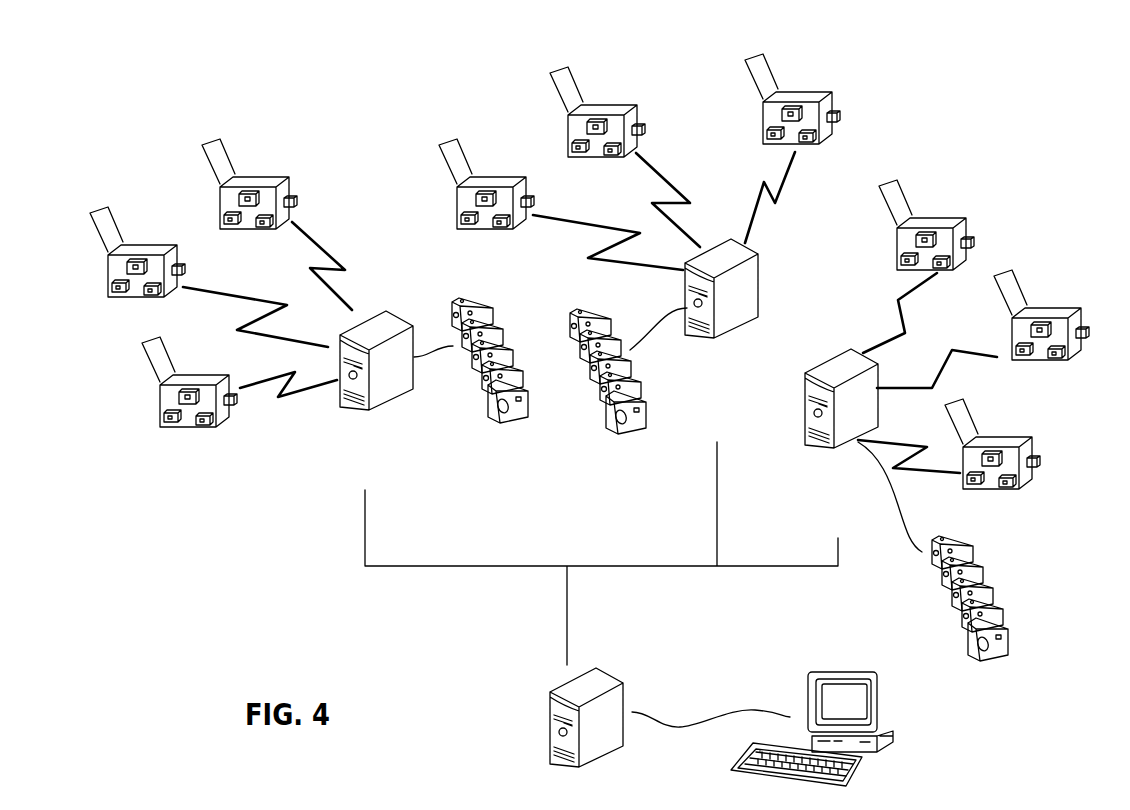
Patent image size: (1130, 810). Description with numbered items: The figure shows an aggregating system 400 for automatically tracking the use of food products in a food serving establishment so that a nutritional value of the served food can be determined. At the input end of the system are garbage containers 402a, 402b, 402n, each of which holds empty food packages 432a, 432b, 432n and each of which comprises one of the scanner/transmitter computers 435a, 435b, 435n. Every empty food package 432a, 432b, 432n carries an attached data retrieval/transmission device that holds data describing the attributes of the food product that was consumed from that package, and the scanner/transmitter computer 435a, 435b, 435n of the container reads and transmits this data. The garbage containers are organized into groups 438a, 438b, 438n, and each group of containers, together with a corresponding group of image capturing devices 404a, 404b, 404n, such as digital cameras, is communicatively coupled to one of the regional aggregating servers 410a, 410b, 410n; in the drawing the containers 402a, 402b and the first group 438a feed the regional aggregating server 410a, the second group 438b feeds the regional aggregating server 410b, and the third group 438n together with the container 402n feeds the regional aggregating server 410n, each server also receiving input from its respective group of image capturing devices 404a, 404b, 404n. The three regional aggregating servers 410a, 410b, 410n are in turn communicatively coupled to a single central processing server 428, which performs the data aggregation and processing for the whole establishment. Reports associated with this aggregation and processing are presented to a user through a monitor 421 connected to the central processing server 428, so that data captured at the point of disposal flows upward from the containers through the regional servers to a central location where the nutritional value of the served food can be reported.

The aggregating system 400 is at (130, 85).
The garbage container 402a is at (205, 383).
The garbage container 402b is at (155, 252).
The garbage container 402n is at (1007, 447).
The empty food package 432a is at (164, 382).
The empty food package 432b is at (112, 252).
The empty food package 432n is at (1028, 444).
The scanner/transmitter computer 435a is at (257, 414).
The scanner/transmitter computer 435b is at (209, 272).
The scanner/transmitter computer 435n is at (1061, 474).
The group of garbage containers 438a is at (276, 165).
The group of garbage containers 438b is at (501, 99).
The group of garbage containers 438n is at (1039, 241).
The regional aggregating server 410a is at (387, 307).
The regional aggregating server 410b is at (730, 240).
The regional aggregating server 410n is at (848, 350).
The group of image capturing devices 404a is at (514, 312).
The group of image capturing devices 404b is at (629, 331).
The group of image capturing devices 404n is at (1002, 579).
The central processing server 428 is at (597, 670).
The monitor 421 is at (845, 672).